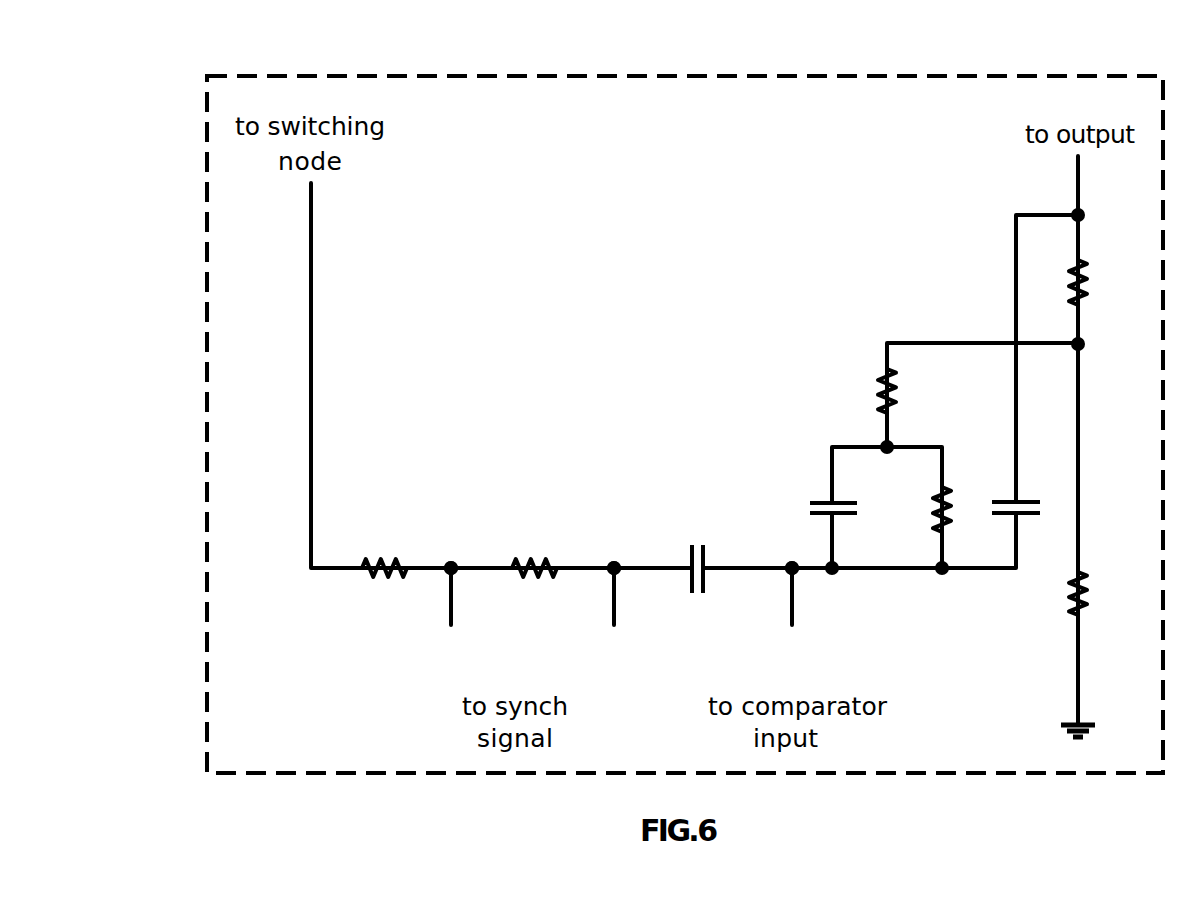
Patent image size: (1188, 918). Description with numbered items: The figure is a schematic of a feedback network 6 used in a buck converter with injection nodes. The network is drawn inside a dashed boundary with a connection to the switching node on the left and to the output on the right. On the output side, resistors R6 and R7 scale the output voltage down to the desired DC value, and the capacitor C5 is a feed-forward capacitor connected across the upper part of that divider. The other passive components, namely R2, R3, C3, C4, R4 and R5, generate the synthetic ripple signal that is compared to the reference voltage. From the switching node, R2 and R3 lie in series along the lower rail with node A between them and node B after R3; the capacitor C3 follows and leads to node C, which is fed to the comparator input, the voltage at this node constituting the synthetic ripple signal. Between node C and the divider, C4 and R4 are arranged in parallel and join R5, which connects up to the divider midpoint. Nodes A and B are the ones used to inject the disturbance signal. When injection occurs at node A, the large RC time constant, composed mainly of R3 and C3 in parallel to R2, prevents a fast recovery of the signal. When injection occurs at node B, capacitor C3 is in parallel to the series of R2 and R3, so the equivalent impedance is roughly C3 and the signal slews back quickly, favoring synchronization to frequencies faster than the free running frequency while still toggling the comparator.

The feedback network 6 is at (566, 74).
The resistor R2 is at (384, 545).
The resistor R3 is at (534, 545).
The resistor R4 is at (920, 509).
The resistor R5 is at (858, 391).
The resistor R6 is at (1102, 282).
The resistor R7 is at (1103, 593).
The capacitor C3 is at (698, 551).
The capacitor C4 is at (811, 501).
The feed-forward capacitor C5 is at (1003, 485).
The node A is at (449, 617).
The node B is at (614, 617).
The node C is at (792, 617).